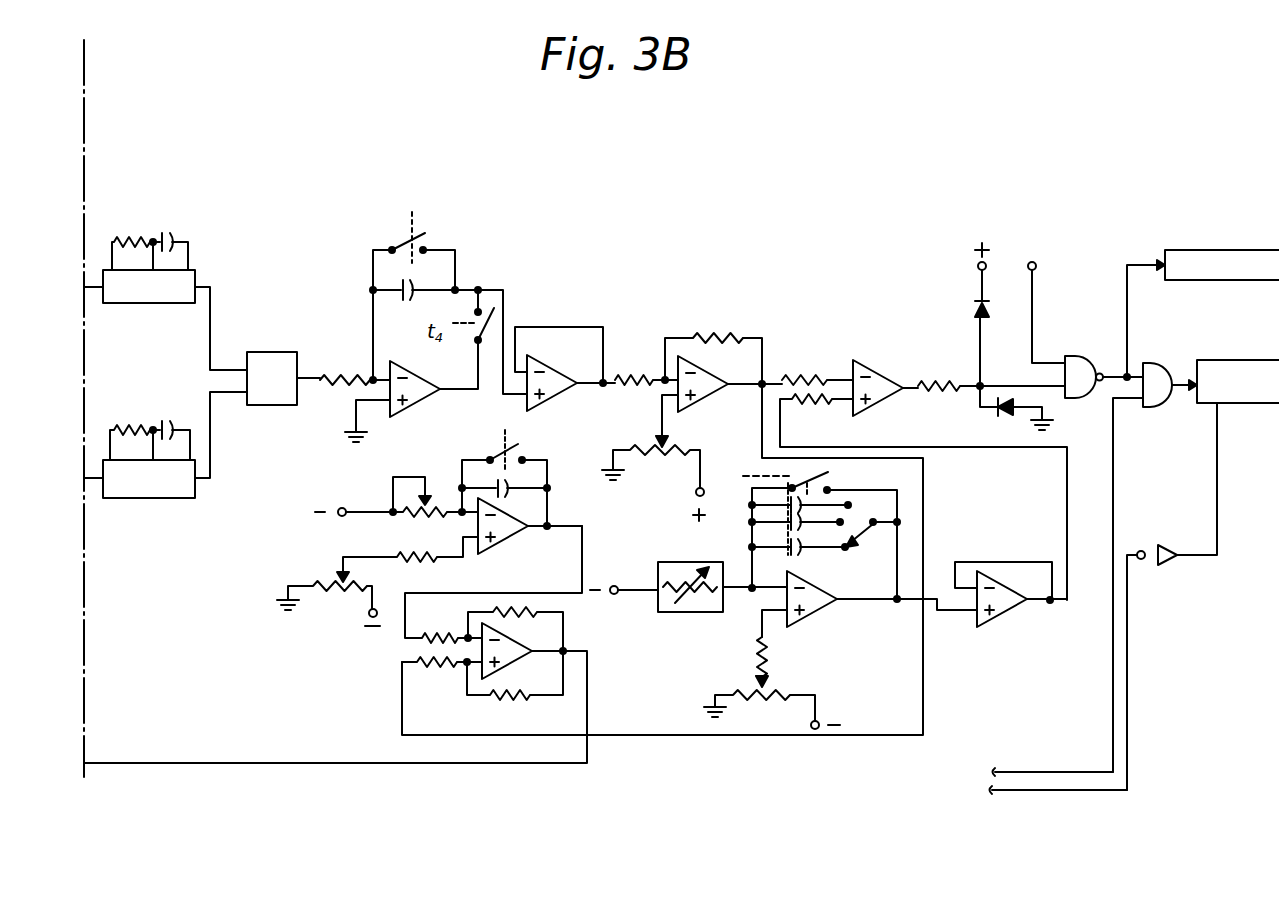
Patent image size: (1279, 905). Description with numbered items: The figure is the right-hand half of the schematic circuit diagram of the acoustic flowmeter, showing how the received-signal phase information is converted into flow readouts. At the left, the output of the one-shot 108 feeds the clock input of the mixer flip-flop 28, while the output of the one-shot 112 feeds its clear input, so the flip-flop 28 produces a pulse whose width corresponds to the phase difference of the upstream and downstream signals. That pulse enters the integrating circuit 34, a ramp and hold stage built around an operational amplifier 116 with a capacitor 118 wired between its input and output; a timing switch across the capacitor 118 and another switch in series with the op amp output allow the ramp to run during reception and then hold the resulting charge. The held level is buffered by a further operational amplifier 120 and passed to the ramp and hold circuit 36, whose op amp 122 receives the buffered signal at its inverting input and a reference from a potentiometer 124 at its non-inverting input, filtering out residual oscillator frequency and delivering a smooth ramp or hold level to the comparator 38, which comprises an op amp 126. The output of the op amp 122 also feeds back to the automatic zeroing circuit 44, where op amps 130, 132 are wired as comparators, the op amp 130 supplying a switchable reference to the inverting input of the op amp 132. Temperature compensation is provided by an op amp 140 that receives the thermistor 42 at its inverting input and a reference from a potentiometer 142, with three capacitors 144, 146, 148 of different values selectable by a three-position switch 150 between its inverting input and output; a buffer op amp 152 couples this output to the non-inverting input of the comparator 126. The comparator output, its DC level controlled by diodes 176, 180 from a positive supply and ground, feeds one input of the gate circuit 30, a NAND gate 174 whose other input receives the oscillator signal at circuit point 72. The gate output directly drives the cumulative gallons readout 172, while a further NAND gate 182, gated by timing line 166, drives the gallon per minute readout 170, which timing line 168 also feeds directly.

The one-shot 108 is at (197, 283).
The one-shot 112 is at (150, 498).
The mixer flip-flop 28 is at (298, 330).
The integrating circuit 34 is at (452, 234).
The capacitor 118 is at (425, 330).
The operational amplifier 116 is at (412, 410).
The operational amplifier 120 is at (560, 396).
The ramp and hold circuit 36 is at (708, 320).
The operational amplifier 122 is at (697, 408).
The potentiometer 124 is at (690, 447).
The comparator 38 is at (869, 355).
The operational amplifier 126 is at (896, 396).
The diode 176 is at (968, 312).
The circuit point 72 is at (1056, 242).
The gate circuit 30 is at (1100, 325).
The cumulative gallons readout 172 is at (1213, 220).
The NAND gate 182 is at (1185, 345).
The NAND gate 174 is at (1066, 430).
The diode 180 is at (1008, 420).
The gallon per minute readout 170 is at (1252, 410).
The thermistor 42 is at (660, 562).
The automatic zeroing circuit 44 is at (396, 649).
The operational amplifier 130 is at (505, 552).
The operational amplifier 132 is at (517, 647).
The operational amplifier 140 is at (820, 612).
The potentiometer 142 is at (792, 682).
The capacitor 144 is at (830, 498).
The capacitor 146 is at (830, 520).
The capacitor 148 is at (812, 557).
The three-position switch 150 is at (876, 540).
The operational amplifier 152 is at (1002, 615).
The timing line 166 is at (1030, 755).
The timing control line 168 is at (1071, 790).